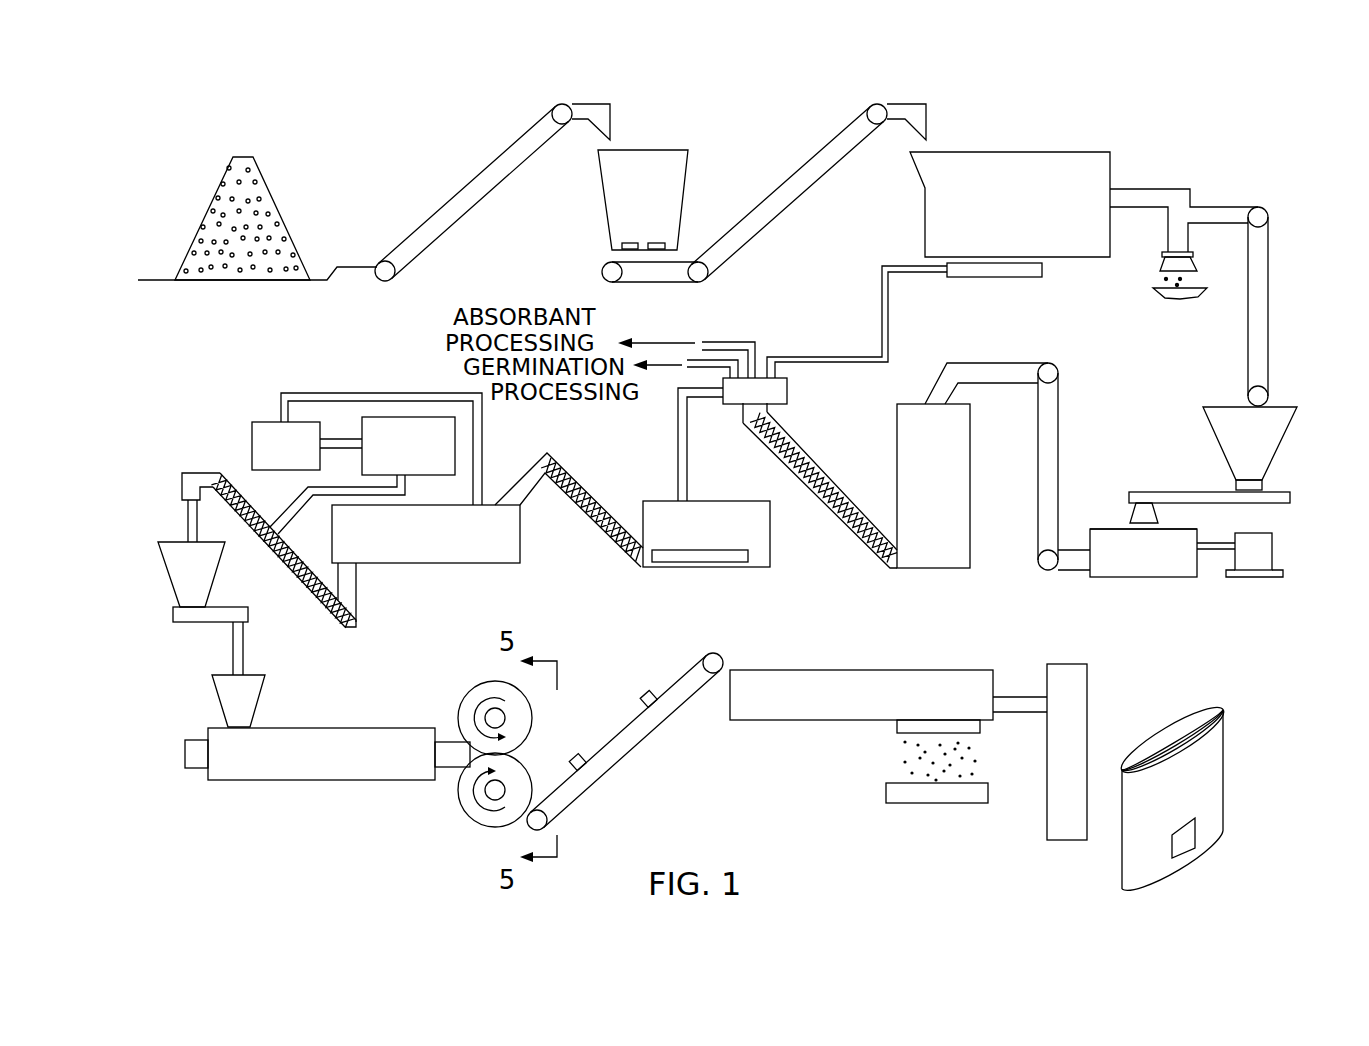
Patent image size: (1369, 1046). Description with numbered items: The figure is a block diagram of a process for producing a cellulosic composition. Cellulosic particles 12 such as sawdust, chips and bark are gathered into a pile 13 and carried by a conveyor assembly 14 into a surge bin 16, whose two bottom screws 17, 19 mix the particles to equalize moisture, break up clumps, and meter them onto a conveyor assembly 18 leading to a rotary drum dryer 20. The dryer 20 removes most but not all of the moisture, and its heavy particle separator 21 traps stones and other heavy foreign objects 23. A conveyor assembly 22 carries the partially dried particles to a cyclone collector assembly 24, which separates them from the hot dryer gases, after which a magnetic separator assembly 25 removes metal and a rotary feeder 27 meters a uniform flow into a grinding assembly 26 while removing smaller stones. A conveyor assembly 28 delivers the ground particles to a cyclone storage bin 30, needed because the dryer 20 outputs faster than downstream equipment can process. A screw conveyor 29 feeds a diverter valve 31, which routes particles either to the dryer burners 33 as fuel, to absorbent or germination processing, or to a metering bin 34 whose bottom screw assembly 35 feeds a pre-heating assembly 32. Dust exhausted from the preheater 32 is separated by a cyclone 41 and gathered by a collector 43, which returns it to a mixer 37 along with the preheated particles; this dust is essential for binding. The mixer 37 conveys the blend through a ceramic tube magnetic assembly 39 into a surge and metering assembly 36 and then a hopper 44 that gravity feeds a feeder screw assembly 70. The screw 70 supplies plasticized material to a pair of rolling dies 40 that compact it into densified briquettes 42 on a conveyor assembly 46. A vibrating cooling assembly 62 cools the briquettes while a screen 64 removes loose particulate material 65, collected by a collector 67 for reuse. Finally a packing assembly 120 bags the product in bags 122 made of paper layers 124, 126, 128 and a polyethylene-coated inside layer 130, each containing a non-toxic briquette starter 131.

The cellulosic particles 12 is at (245, 183).
The pile 13 is at (306, 199).
The conveyor assembly 14 is at (462, 192).
The surge bin 16 is at (660, 155).
The bottom screw 17 is at (617, 243).
The conveyor assembly 18 is at (792, 195).
The bottom screw 19 is at (655, 243).
The dryer 20 is at (993, 165).
The heavy particle separator 21 is at (1172, 254).
The conveyor assembly 22 is at (1263, 286).
The heavy foreign objects 23 is at (1192, 284).
The cyclone collector assembly 24 is at (1270, 420).
The magnetic separator assembly 25 is at (1142, 508).
The grinding assembly 26 is at (1130, 568).
The rotary feeder 27 is at (1130, 528).
The conveyor assembly 28 is at (1053, 447).
The screw conveyor 29 is at (813, 468).
The cyclone storage bin 30 is at (957, 462).
The diverter valve 31 is at (773, 398).
The pre-heating assembly 32 is at (500, 545).
The dryer burners 33 is at (985, 280).
The metering bin 34 is at (757, 530).
The bottom screw assembly 35 is at (690, 555).
The surge and metering assembly 36 is at (202, 566).
The mixer 37 is at (285, 560).
The ceramic tube magnetic assembly 39 is at (190, 520).
The rolling dies 40 is at (468, 700).
The cyclone 41 is at (262, 437).
The densified cellulosic material 42 is at (583, 755).
The collector 43 is at (438, 453).
The hopper 44 is at (258, 692).
The conveyor assembly 46 is at (625, 742).
The vibrating cooling assembly 62 is at (840, 705).
The screen 64 is at (973, 727).
The cellulosic particulate material 65 is at (920, 760).
The cellulosic particulate collector 67 is at (950, 798).
The feeder screw assembly 70 is at (335, 770).
The packing assembly 120 is at (1057, 675).
The bag 122 is at (1095, 894).
The paper layer 124 is at (1200, 752).
The paper layer 126 is at (1200, 740).
The paper layer 128 is at (1222, 722).
The inside layer 130 is at (1208, 715).
The briquette starter 131 is at (1183, 850).